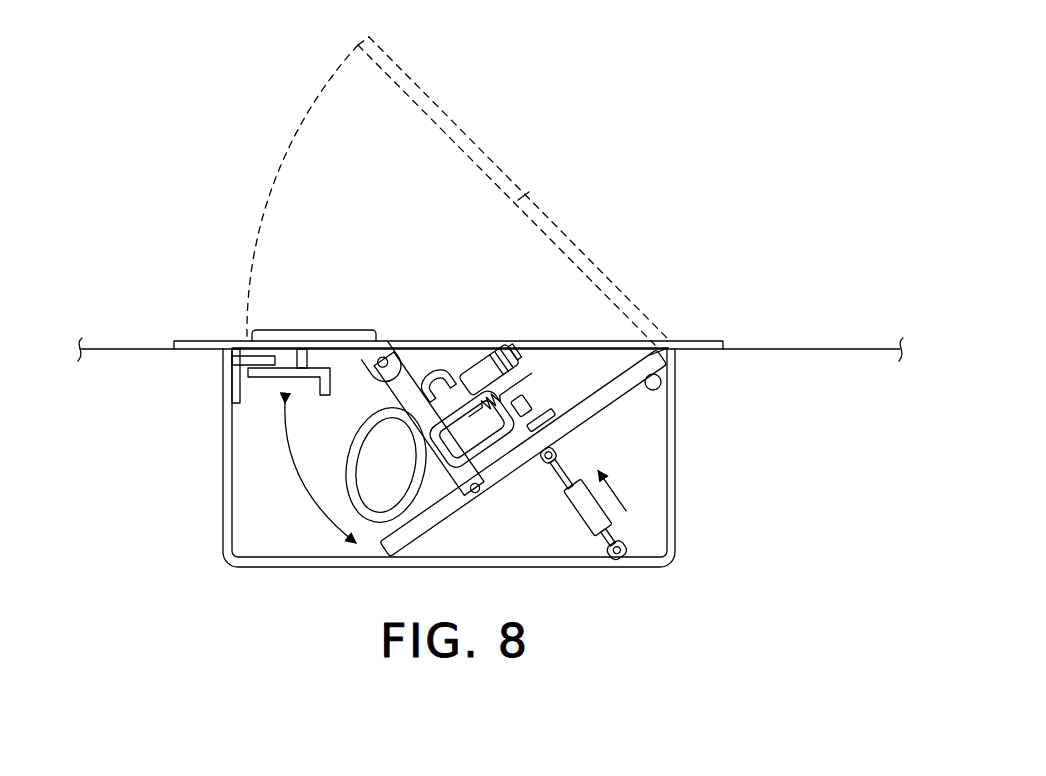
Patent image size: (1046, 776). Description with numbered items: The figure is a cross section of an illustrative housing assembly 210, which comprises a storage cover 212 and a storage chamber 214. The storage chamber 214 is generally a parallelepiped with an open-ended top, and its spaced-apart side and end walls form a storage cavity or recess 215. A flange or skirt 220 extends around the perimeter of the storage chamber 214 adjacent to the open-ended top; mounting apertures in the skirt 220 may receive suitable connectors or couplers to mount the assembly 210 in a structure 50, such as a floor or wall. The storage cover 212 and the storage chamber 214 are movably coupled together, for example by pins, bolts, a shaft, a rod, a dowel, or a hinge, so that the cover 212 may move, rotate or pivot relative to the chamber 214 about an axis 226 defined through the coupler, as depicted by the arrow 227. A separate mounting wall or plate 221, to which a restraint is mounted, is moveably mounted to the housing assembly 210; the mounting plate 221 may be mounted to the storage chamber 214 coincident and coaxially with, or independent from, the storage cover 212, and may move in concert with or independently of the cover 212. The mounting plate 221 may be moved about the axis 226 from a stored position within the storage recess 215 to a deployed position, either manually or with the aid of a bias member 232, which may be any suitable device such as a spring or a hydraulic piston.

The structure 50 is at (785, 341).
The housing assembly 210 is at (490, 290).
The storage cover 212 is at (434, 346).
The storage chamber 214 is at (672, 461).
The storage cavity or recess 215 is at (252, 462).
The flange or skirt 220 is at (198, 341).
The mounting wall or plate 221 is at (560, 349).
The axis 226 is at (661, 383).
The arrow 227 is at (312, 490).
The bias member 232 is at (583, 506).